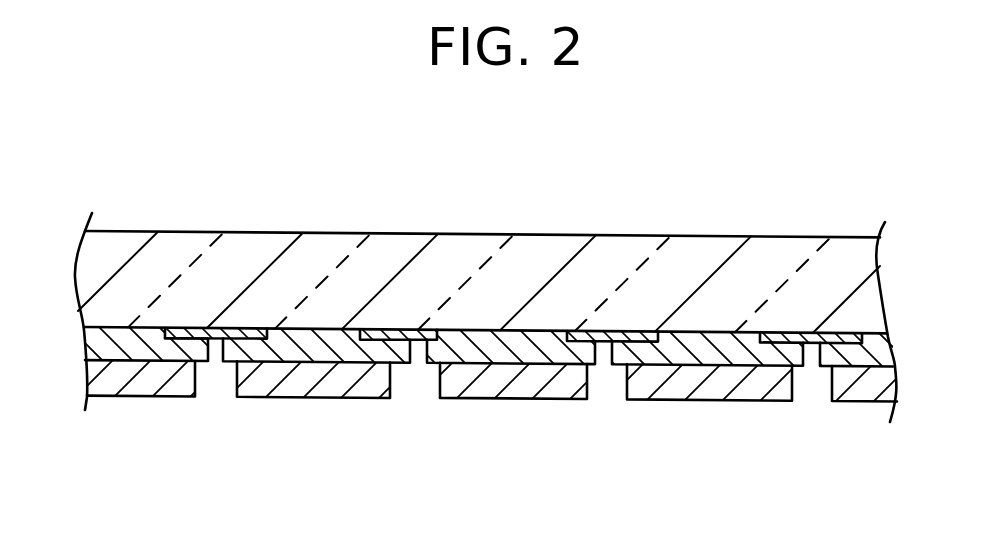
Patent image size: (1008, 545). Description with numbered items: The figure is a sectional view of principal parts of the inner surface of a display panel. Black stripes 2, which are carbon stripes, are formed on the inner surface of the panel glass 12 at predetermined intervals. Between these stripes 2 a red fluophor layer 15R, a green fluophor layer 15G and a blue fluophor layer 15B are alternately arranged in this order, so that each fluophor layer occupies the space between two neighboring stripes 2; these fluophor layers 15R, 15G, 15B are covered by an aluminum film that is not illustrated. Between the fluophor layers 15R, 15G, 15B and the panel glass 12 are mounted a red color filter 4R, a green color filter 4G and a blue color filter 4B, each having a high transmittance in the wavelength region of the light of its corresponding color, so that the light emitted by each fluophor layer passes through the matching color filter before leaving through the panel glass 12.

The panel glass 12 is at (777, 262).
The black stripes 2 is at (206, 328).
The red color filter 4R is at (310, 328).
The green color filter 4G is at (503, 328).
The blue color filter 4B is at (707, 332).
The red fluophor layer 15R is at (315, 398).
The green fluophor layer 15G is at (507, 398).
The blue fluophor layer 15B is at (700, 400).